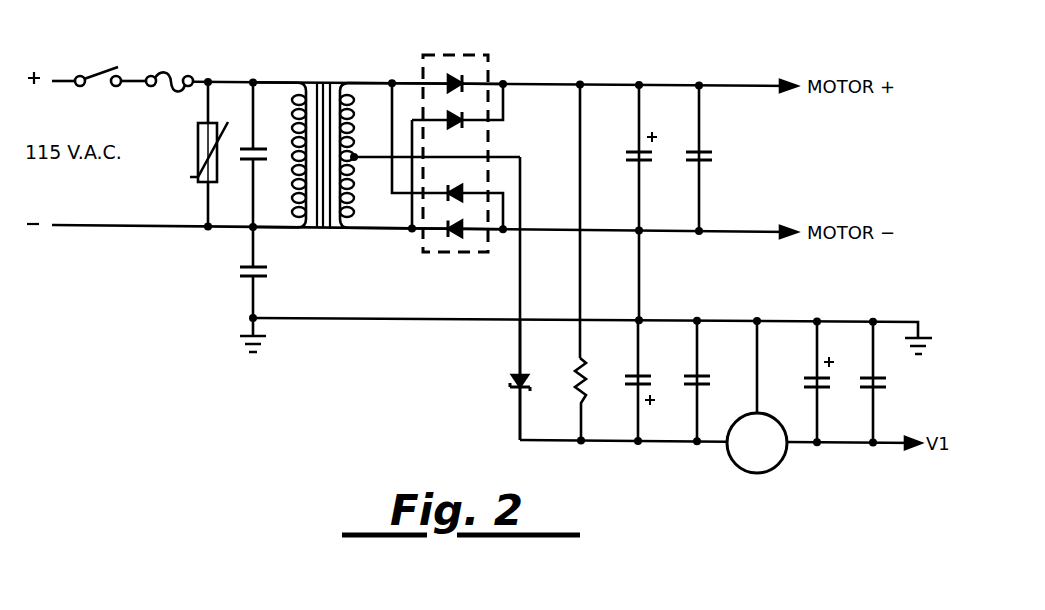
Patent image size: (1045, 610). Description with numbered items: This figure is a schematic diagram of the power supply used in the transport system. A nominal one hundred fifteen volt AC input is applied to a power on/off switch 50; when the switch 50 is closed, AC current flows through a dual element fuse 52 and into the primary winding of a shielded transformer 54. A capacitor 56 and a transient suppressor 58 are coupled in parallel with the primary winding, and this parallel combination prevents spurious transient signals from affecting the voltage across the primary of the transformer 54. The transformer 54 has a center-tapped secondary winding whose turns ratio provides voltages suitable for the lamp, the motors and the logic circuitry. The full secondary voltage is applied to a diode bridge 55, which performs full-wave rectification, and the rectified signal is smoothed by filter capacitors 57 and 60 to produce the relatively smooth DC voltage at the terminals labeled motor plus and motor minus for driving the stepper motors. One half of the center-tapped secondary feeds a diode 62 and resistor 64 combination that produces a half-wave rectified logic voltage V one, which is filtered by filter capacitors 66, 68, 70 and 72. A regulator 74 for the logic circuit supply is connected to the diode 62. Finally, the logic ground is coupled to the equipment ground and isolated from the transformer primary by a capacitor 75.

The power on/off switch 50 is at (100, 70).
The dual element fuse 52 is at (165, 74).
The shielded transformer 54 is at (322, 75).
The diode bridge 55 is at (455, 54).
The capacitor 56 is at (268, 154).
The filter capacitor 57 is at (652, 156).
The transient suppressor 58 is at (198, 143).
The filter capacitor 60 is at (712, 156).
The diode 62 is at (513, 378).
The resistor 64 is at (576, 376).
The filter capacitor 66 is at (651, 380).
The filter capacitor 68 is at (710, 380).
The filter capacitor 70 is at (830, 383).
The filter capacitor 72 is at (886, 383).
The regulator 74 is at (760, 473).
The capacitor 75 is at (240, 273).